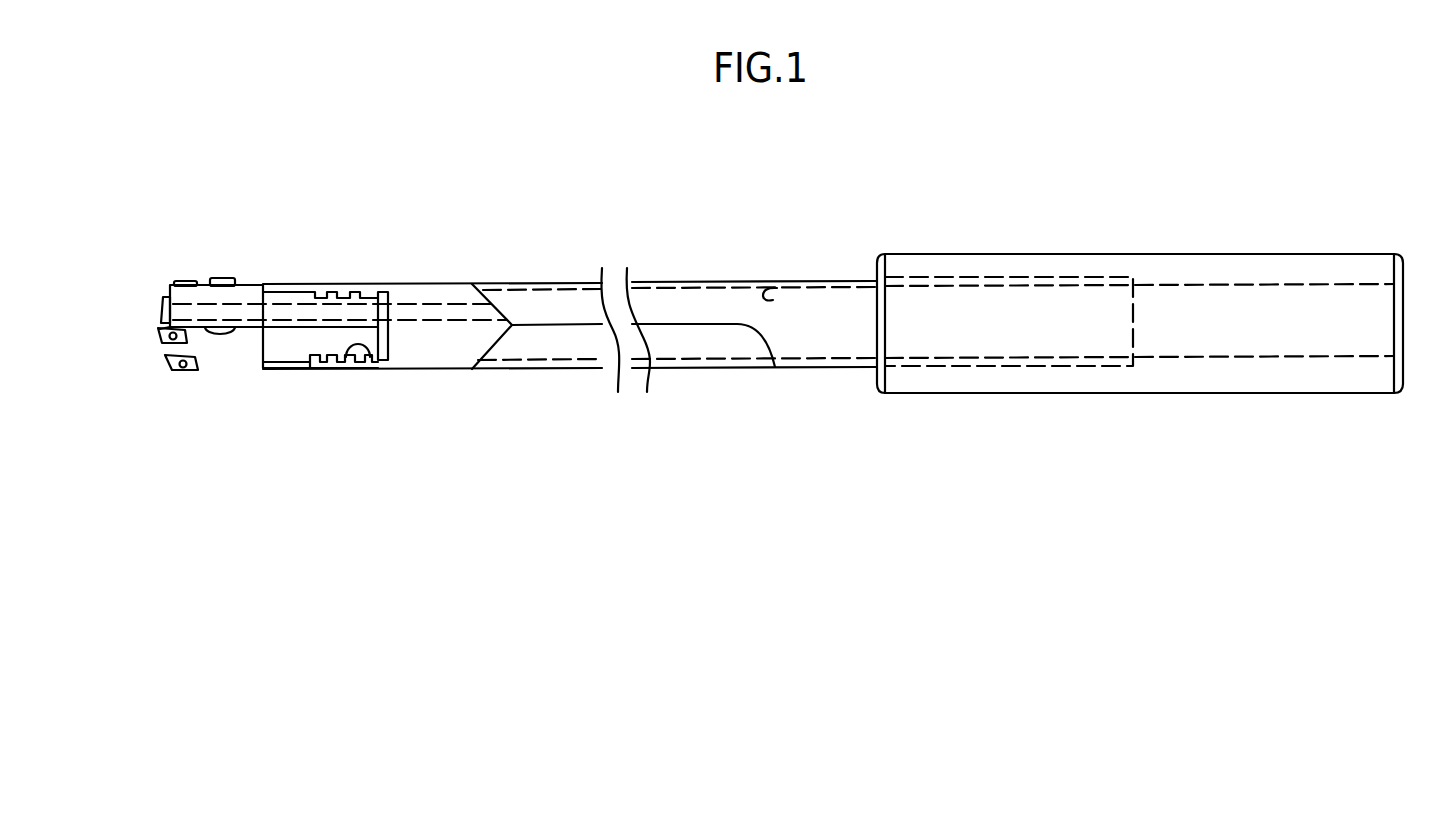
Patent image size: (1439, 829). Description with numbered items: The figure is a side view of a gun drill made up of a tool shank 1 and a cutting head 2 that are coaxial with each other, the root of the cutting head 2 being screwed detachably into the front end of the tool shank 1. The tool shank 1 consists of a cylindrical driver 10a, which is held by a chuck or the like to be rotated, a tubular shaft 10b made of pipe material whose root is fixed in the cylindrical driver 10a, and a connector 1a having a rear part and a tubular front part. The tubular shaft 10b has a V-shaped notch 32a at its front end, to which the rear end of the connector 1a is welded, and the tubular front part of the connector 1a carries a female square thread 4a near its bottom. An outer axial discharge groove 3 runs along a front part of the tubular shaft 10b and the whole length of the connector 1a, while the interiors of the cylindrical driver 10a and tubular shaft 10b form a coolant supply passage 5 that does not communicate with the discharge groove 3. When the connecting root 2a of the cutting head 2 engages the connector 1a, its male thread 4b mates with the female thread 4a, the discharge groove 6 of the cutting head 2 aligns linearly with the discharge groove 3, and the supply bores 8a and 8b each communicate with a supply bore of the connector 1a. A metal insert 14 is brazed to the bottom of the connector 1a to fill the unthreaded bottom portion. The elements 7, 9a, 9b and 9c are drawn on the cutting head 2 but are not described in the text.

The tool shank 1 is at (1048, 246).
The connector 1a is at (342, 281).
The cutting head 2 is at (203, 268).
The connecting root 2a is at (283, 363).
The discharge groove 3 is at (572, 340).
The female square thread 4a is at (367, 363).
The male thread 4b is at (318, 367).
The coolant supply passage 5 is at (783, 292).
The discharge groove 6 is at (247, 353).
The protrusion 7 is at (222, 336).
The supply bore 8a is at (237, 303).
The supply bore 8b is at (287, 333).
The first tab 9a is at (163, 334).
The bracket 9b is at (160, 302).
The second tab 9c is at (170, 375).
The cylindrical driver 10a is at (1040, 390).
The tubular shaft 10b is at (697, 280).
The metal insert 14 is at (383, 363).
The V-shaped notch 32a is at (508, 310).